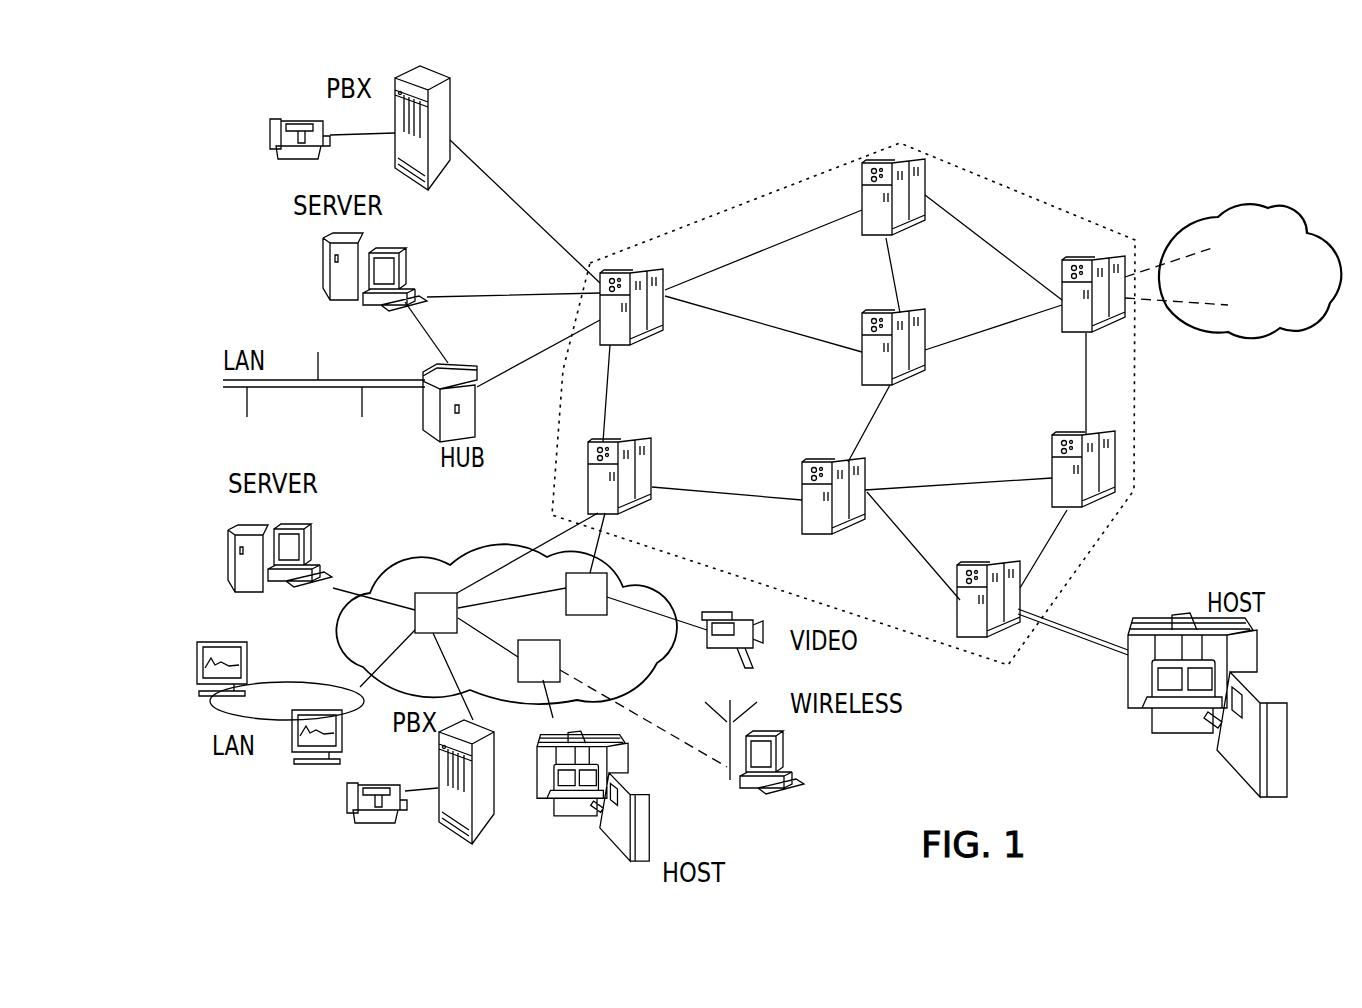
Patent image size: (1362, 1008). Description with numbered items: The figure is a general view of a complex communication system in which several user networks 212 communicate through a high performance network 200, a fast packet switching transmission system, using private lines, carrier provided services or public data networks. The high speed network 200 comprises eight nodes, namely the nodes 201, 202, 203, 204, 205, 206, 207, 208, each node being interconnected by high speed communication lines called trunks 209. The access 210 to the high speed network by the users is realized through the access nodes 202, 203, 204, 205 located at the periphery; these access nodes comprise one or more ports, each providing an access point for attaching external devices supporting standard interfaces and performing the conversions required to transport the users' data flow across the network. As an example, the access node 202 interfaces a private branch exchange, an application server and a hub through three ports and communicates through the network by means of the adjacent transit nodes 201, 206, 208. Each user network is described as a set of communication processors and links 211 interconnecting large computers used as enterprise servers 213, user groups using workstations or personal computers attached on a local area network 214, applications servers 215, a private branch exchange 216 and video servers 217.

The high performance network 200 is at (757, 200).
The transit node 201 is at (920, 160).
The access node 202 is at (650, 268).
The access node 203 is at (998, 562).
The access node 204 is at (1105, 258).
The access node 205 is at (650, 438).
The transit node 206 is at (862, 462).
The node 207 is at (1116, 436).
The transit node 208 is at (916, 312).
The trunk 209 is at (963, 340).
The access 210 is at (538, 203).
The communication processors and links 211 is at (440, 560).
The user network 212 is at (1218, 216).
The enterprise server 213 is at (655, 820).
The local area network 214 is at (303, 686).
The applications server 215 is at (228, 555).
The private branch exchange 216 is at (448, 826).
The video server 217 is at (730, 612).